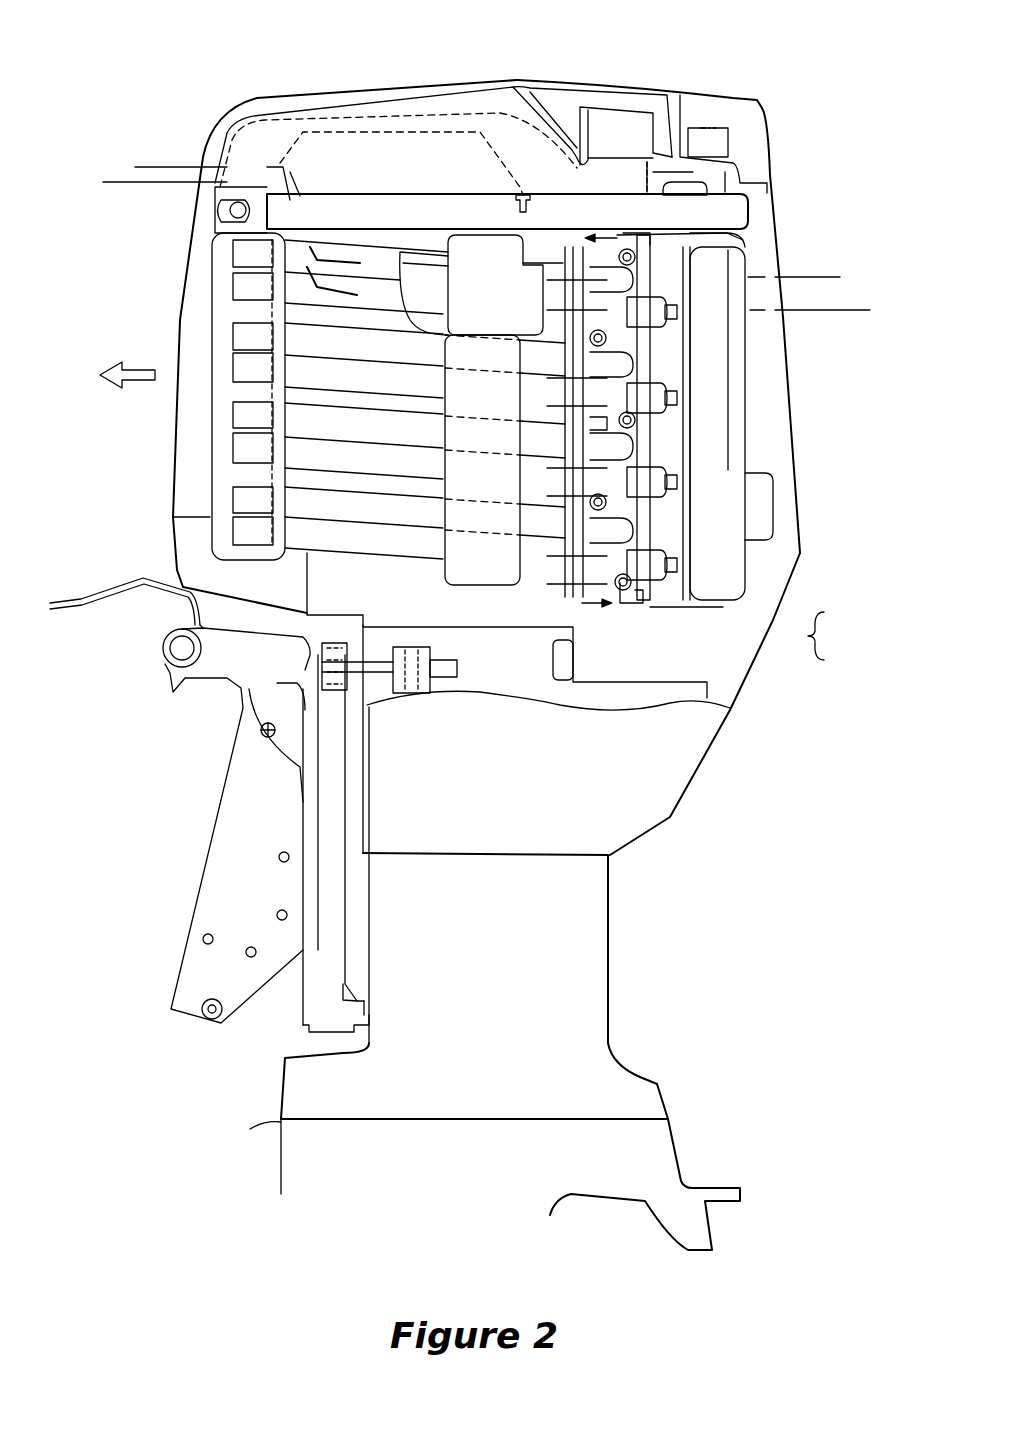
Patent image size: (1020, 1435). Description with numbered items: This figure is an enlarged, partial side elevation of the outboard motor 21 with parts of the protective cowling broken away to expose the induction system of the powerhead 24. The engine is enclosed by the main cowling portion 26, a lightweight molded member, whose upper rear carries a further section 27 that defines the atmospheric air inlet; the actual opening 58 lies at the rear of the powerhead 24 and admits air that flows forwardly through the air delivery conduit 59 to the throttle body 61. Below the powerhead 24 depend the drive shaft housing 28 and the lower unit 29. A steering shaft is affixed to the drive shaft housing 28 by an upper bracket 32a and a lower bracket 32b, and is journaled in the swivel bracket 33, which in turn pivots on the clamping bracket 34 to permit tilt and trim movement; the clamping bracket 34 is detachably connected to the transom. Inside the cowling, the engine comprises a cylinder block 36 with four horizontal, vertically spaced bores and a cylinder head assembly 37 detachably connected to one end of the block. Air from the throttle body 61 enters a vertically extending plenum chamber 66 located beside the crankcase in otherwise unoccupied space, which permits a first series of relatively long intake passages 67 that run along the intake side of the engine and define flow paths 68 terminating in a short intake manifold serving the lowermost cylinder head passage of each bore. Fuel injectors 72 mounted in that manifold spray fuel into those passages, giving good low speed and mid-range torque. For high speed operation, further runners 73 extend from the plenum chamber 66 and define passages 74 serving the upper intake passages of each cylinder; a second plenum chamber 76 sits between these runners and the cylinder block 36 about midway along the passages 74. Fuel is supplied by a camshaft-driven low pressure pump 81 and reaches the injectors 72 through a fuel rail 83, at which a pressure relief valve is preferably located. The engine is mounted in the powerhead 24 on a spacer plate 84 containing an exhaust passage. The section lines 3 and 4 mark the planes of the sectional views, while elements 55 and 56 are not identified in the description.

The outboard motor 21 is at (814, 137).
The powerhead assembly 24 is at (837, 636).
The main cowling portion 26 is at (800, 517).
The further section of main cowling 27 is at (690, 100).
The drive shaft housing 28 is at (593, 943).
The lower unit 29 is at (676, 1148).
The upper bracket 32a is at (383, 660).
The lower bracket 32b is at (357, 1019).
The swivel bracket 33 is at (760, 242).
The clamping bracket 34 is at (229, 851).
The cylinder block 36 is at (320, 581).
The cylinder head assembly 37 is at (756, 437).
The intake manifold 55 is at (313, 193).
The air inlet opening 56 is at (462, 130).
The opening 58 is at (597, 110).
The air delivery conduit 59 is at (350, 117).
The throttle body 61 is at (213, 208).
The plenum chamber 66 is at (215, 328).
The intake passages 67 is at (610, 320).
The flow paths 68 is at (423, 303).
The fuel injectors 72 is at (670, 327).
The further runners 73 is at (553, 270).
The runner passages 74 is at (417, 260).
The second plenum chamber 76 is at (485, 233).
The low pressure pump 81 is at (767, 508).
The fuel rail 83 is at (647, 437).
The spacer plate 84 is at (530, 667).
The section line 3- 3 is at (143, 115).
The section line 4- 4 is at (105, 125).